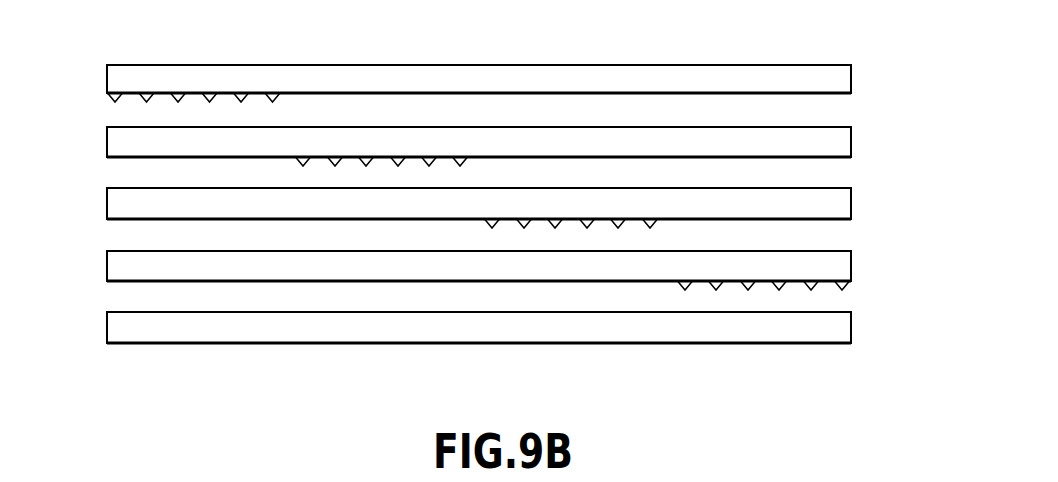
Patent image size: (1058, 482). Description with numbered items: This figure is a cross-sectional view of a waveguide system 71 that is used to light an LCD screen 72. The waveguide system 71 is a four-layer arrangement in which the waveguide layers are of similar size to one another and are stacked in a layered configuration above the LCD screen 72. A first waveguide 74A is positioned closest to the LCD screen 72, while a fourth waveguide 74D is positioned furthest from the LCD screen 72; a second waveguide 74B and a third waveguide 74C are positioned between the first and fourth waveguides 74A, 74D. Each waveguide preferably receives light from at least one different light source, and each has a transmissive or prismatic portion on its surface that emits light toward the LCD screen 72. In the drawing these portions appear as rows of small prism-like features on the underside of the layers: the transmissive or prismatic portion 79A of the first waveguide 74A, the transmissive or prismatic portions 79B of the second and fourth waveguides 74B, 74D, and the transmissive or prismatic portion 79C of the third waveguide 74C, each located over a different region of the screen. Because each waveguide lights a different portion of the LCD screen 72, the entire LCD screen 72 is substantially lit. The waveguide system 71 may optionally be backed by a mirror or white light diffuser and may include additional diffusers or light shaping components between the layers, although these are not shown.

The waveguide system 71 is at (82, 66).
The LCD screen 72 is at (224, 333).
The first waveguide 74A is at (585, 268).
The second waveguide 74B is at (842, 205).
The third waveguide 74C is at (848, 143).
The fourth waveguide 74D is at (611, 74).
The transmissive or prismatic portion 79A is at (752, 283).
The transmissive or prismatic portion 79B is at (208, 97).
The transmissive or prismatic portion 79C is at (333, 158).